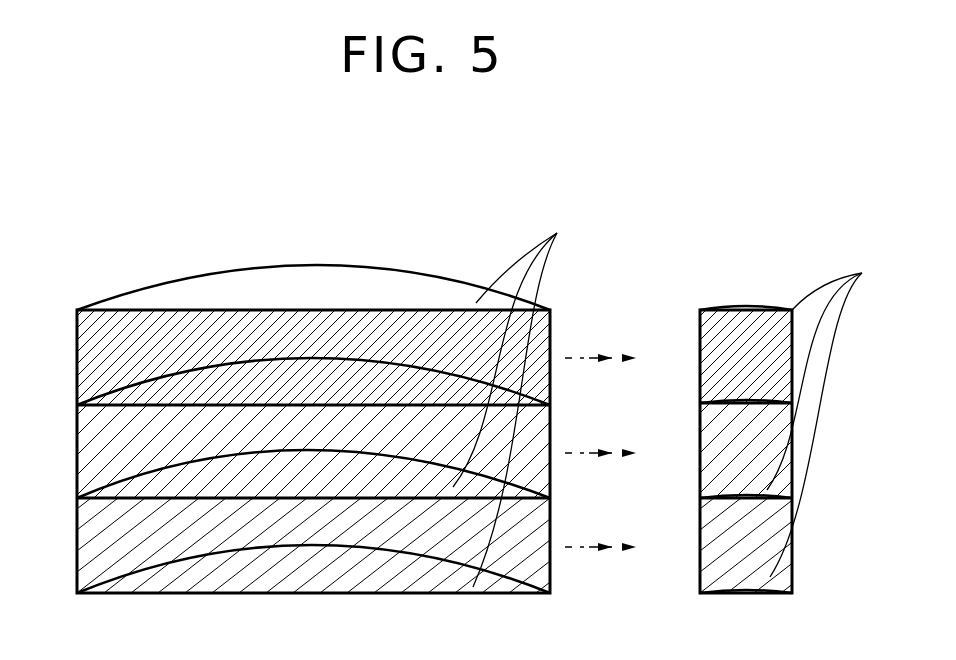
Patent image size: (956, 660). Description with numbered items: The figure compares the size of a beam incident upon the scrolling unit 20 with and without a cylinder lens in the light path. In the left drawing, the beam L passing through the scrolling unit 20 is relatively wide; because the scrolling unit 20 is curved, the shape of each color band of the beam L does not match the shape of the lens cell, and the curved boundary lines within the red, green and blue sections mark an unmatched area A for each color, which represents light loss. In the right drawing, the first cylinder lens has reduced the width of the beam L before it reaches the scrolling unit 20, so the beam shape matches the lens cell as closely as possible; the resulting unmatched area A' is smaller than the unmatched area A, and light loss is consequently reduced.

The scrolling unit 20 is at (320, 263).
The beam L is at (65, 316).
The unmatched area A is at (511, 397).
The unmatched area (reduced beam) A' is at (825, 414).